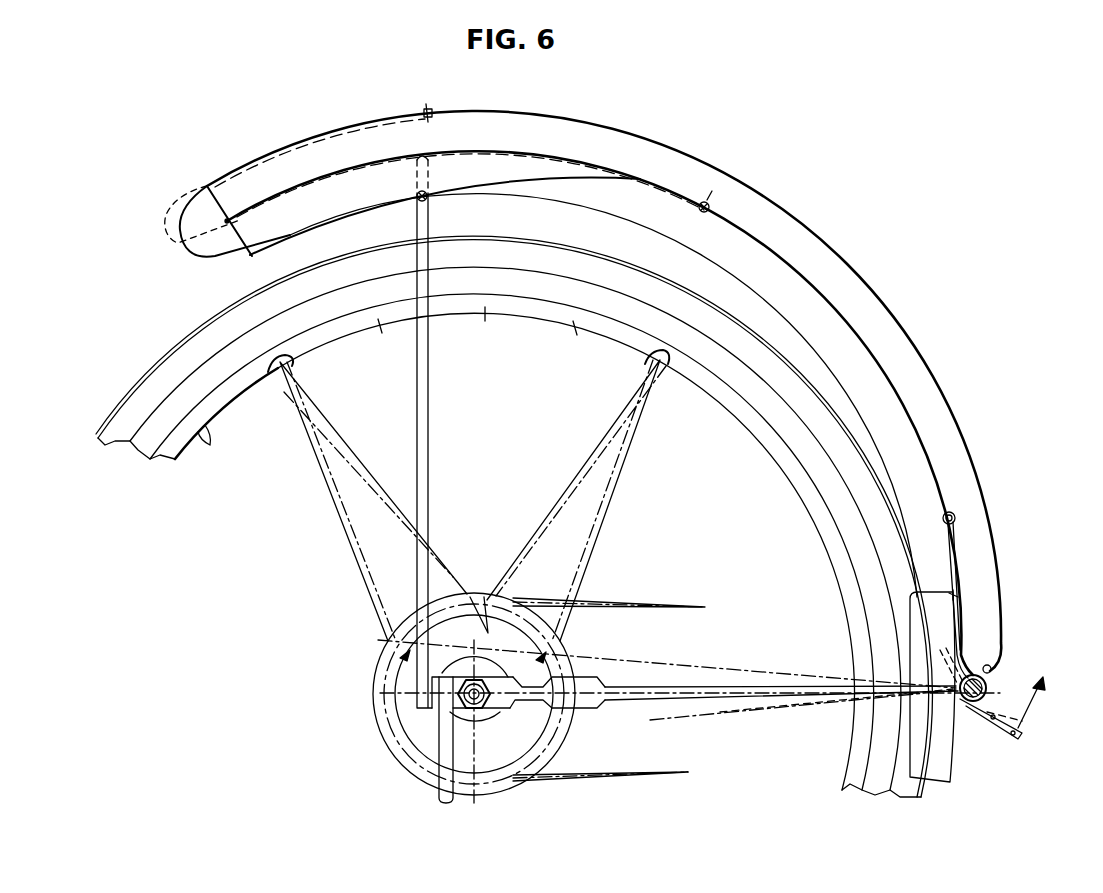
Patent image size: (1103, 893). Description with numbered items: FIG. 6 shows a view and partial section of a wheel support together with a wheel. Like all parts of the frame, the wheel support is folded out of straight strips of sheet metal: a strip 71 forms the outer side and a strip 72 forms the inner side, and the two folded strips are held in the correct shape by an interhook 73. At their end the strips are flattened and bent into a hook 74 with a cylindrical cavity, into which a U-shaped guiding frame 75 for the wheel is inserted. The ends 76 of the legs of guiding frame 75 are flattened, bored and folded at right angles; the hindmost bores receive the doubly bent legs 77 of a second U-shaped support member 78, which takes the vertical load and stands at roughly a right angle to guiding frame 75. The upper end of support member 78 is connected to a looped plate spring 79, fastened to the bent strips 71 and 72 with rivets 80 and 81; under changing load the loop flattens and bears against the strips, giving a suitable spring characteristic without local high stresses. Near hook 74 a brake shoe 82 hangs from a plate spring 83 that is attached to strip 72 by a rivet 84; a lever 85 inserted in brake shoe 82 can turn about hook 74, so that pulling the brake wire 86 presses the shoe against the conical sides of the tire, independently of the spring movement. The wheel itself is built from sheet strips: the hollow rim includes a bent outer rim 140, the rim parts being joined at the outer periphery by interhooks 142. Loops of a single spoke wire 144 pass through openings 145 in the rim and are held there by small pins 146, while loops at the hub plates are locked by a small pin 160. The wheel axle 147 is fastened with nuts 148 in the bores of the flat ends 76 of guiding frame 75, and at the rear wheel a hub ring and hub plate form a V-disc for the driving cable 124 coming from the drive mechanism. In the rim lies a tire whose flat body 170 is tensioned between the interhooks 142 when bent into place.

The strip 71 is at (818, 233).
The strip 72 is at (817, 285).
The interhook 73 is at (822, 357).
The hook 74 is at (990, 681).
The U-shaped guiding frame 75 is at (797, 690).
The ends of the legs of frame 75 76 is at (422, 691).
The doubly bent legs 77 is at (420, 694).
The second U-shaped support member 78 is at (430, 392).
The looped plate spring 79 is at (170, 205).
The rivet 80 is at (433, 109).
The rivet 81 is at (708, 205).
The brake shoe 82 is at (935, 767).
The plate spring 83 is at (957, 565).
The rivet 84 is at (952, 518).
The lever 85 is at (992, 727).
The brake wire 86 is at (1033, 705).
The driving cable 124 is at (664, 602).
The outer rim 140 is at (180, 457).
The interhooks 142 is at (147, 443).
The spoke wire 144 is at (337, 440).
The openings 145 is at (207, 425).
The small pins 146 is at (275, 356).
The wheel axle 147 is at (488, 713).
The nuts 148 is at (473, 703).
The small pin 160 is at (482, 596).
The body 170 is at (143, 385).